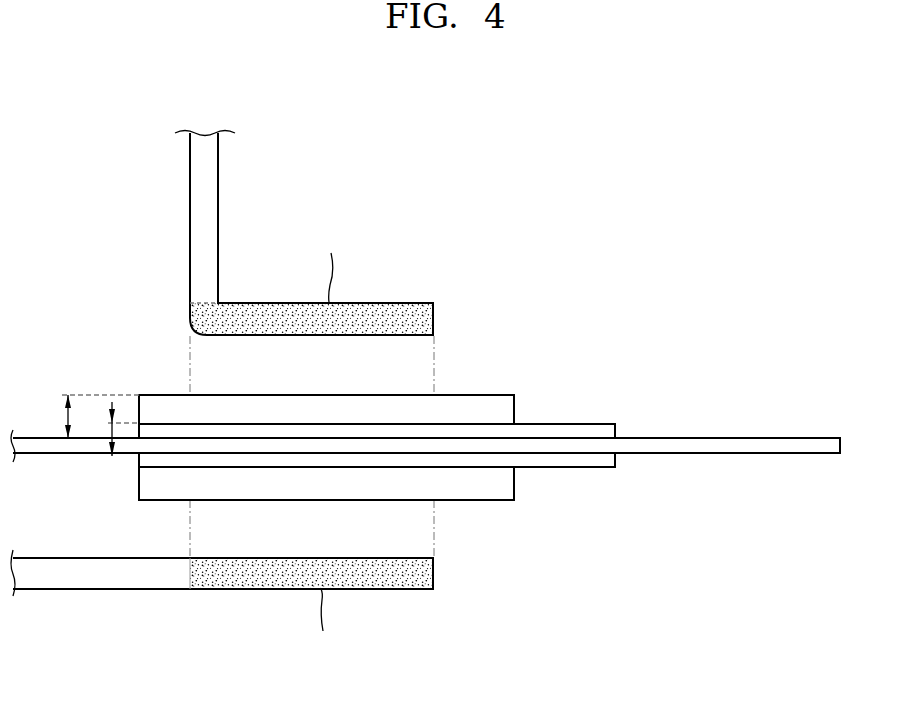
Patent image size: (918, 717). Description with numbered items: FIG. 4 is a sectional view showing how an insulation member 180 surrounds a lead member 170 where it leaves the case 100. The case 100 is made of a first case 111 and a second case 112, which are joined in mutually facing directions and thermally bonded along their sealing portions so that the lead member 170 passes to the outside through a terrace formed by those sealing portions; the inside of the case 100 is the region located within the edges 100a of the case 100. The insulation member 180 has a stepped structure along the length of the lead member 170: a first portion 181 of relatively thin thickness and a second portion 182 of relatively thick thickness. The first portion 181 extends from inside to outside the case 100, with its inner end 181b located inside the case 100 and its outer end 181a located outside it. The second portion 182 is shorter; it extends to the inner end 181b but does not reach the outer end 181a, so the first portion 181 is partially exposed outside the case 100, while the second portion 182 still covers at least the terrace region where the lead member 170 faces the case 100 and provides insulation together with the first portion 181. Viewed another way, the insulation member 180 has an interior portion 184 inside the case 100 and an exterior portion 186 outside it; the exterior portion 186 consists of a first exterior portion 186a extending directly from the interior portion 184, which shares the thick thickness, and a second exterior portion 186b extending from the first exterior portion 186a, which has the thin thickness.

The case 100 is at (433, 158).
The edges of the case 100a is at (435, 305).
The first case 111 is at (190, 213).
The second case 112 is at (100, 589).
The lead member 170 is at (800, 440).
The insulation member 180 is at (498, 334).
The first portion 181 is at (565, 424).
The outer end of the first portion 181a is at (615, 432).
The inner end of the first portion 181b is at (139, 432).
The second portion 182 is at (489, 395).
The interior portion 184 is at (148, 460).
The exterior portion 186 is at (608, 563).
The first exterior portion 186a is at (507, 462).
The second exterior portion 186b is at (596, 462).